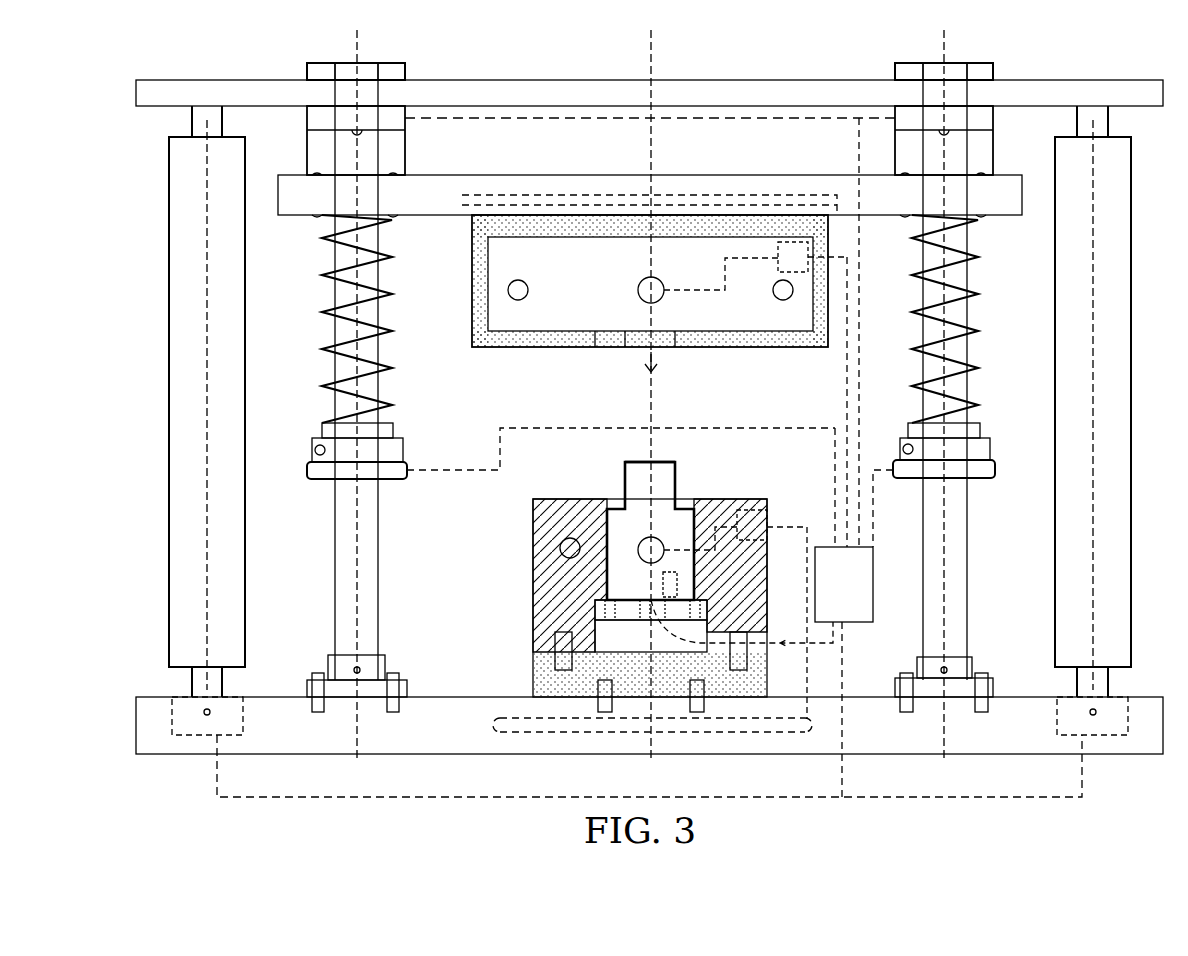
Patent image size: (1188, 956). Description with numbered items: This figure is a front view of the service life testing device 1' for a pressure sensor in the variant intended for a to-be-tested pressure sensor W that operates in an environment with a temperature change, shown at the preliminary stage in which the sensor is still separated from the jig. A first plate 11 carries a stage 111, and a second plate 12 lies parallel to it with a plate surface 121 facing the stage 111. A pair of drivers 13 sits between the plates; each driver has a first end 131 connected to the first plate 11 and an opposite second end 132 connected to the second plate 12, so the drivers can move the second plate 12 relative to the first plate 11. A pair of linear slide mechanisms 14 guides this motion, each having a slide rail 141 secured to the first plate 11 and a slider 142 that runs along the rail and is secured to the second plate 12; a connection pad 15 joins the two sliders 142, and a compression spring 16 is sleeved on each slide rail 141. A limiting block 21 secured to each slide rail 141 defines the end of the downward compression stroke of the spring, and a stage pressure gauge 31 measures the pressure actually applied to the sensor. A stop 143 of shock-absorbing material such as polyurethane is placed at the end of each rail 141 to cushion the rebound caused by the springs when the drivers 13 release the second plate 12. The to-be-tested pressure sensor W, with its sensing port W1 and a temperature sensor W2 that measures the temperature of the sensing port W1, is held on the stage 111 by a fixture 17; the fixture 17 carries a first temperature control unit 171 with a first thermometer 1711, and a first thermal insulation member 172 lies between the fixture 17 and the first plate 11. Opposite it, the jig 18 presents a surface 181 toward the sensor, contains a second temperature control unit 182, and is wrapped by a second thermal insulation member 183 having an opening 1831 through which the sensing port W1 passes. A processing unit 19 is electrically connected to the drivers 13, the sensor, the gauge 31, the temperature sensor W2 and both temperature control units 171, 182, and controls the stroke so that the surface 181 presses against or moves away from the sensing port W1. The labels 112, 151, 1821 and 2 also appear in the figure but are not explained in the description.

The service life testing device for a pressure sensor 1' is at (1158, 46).
The first plate 11 is at (530, 754).
The stage 111 is at (467, 697).
The bottom slide rail 112 is at (632, 732).
The second plate 12 is at (596, 80).
The plate surface 121 is at (572, 118).
The driver 13 is at (169, 348).
The first end 131 is at (192, 690).
The second end 132 is at (192, 125).
The linear slide mechanism 14 is at (300, 328).
The slide rail 141 is at (378, 315).
The slider 142 is at (405, 150).
The stop 143 is at (405, 72).
The connection pad 15 is at (618, 175).
The slide rail 151 is at (672, 195).
The compression spring 16 is at (385, 332).
The fixture 17 is at (574, 491).
The first temperature control unit 171 is at (735, 614).
The first thermometer 1711 is at (662, 540).
The first thermal insulation member 172 is at (533, 670).
The jig 18 is at (545, 347).
The surface 181 is at (595, 347).
The second temperature control unit 182 is at (755, 266).
The press head hole 1821 is at (638, 290).
The second thermal insulation member 183 is at (472, 235).
The opening 1831 is at (640, 347).
The processing unit 19 is at (762, 672).
The press assembly 2 is at (1020, 230).
The limiting block 21 is at (395, 447).
The stage pressure gauge 31 is at (307, 472).
The to-be-tested pressure sensor W is at (690, 515).
The sensing port W1 is at (635, 462).
The temperature sensor W2 is at (690, 560).